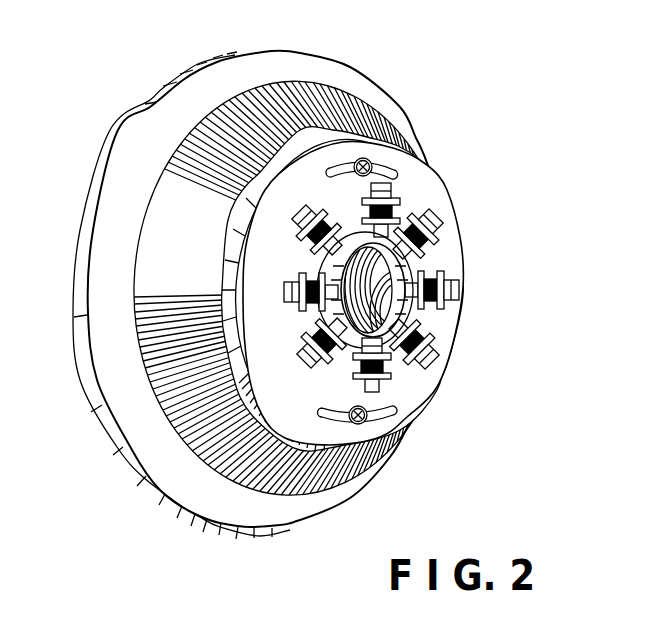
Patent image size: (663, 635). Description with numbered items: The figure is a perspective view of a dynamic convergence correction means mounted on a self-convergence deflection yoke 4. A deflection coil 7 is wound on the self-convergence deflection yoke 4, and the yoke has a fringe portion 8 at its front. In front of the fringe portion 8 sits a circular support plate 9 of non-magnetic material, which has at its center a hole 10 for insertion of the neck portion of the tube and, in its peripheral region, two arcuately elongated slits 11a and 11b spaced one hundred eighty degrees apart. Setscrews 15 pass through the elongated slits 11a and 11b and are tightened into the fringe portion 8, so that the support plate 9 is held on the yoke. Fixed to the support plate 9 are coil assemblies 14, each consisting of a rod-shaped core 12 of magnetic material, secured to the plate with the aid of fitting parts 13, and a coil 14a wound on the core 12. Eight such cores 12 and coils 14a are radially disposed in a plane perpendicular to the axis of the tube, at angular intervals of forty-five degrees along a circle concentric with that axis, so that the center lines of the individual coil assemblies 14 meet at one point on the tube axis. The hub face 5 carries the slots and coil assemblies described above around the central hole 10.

The self-convergence deflection yoke 4 is at (270, 48).
The hub face 5 is at (456, 217).
The deflection coil 7 is at (322, 103).
The fringe portion 8 is at (345, 131).
The circular support plate 9 is at (312, 395).
The hole 10 is at (398, 266).
The arcuately elongated slit 11a is at (394, 173).
The arcuately elongated slit 11b is at (393, 414).
The rod-shaped core 12 is at (436, 364).
The fitting part 13 is at (437, 353).
The coil assembly 14 is at (481, 342).
The coil 14a is at (422, 340).
The setscrew 15 is at (370, 160).